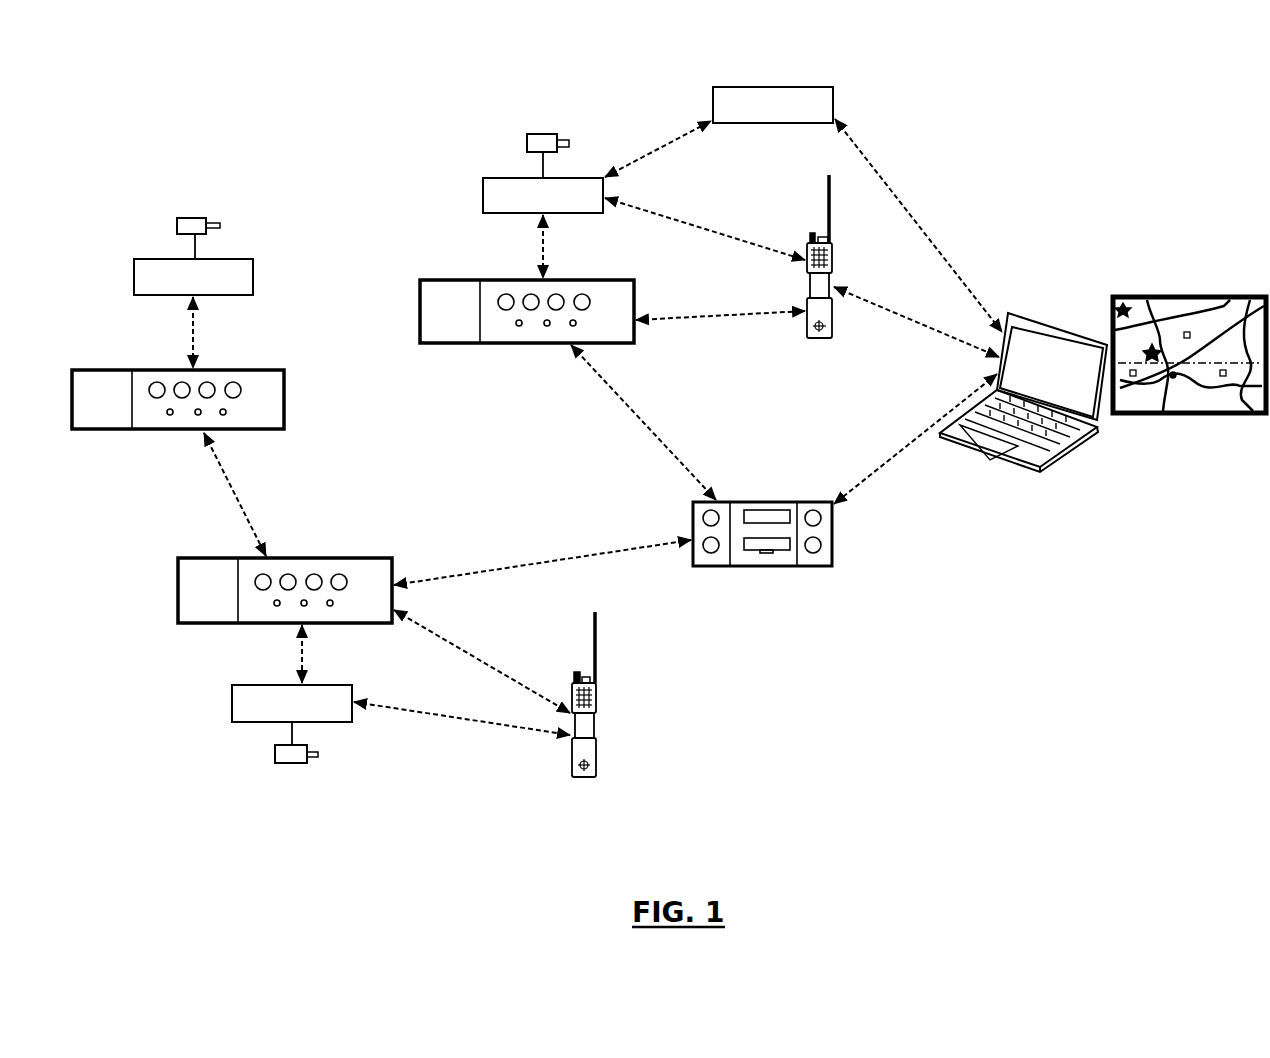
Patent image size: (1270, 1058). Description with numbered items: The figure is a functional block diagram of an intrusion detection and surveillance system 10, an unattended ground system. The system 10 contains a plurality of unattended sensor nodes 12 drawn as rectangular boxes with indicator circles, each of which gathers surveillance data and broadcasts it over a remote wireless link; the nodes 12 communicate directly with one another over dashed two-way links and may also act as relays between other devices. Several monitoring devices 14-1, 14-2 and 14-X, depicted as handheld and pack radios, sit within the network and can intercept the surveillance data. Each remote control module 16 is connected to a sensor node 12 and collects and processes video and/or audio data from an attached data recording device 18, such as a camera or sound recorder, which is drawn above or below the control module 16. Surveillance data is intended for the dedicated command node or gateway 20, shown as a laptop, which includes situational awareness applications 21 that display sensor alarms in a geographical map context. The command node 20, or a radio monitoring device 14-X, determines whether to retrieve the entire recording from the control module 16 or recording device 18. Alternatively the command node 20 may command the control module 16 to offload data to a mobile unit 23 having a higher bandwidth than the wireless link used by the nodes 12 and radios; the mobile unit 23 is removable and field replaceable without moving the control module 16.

The intrusion detection and surveillance system 10 is at (992, 182).
The unattended sensor node 12 is at (284, 393).
The monitoring device 14-1 is at (807, 337).
The monitoring device 14-2 is at (832, 548).
The monitoring device 14-X is at (596, 700).
The remote control module 16 is at (253, 277).
The data recording device 18 is at (212, 218).
The command node 20 is at (970, 445).
The situational awareness application 21 is at (1177, 297).
The mobile unit 23 is at (758, 87).